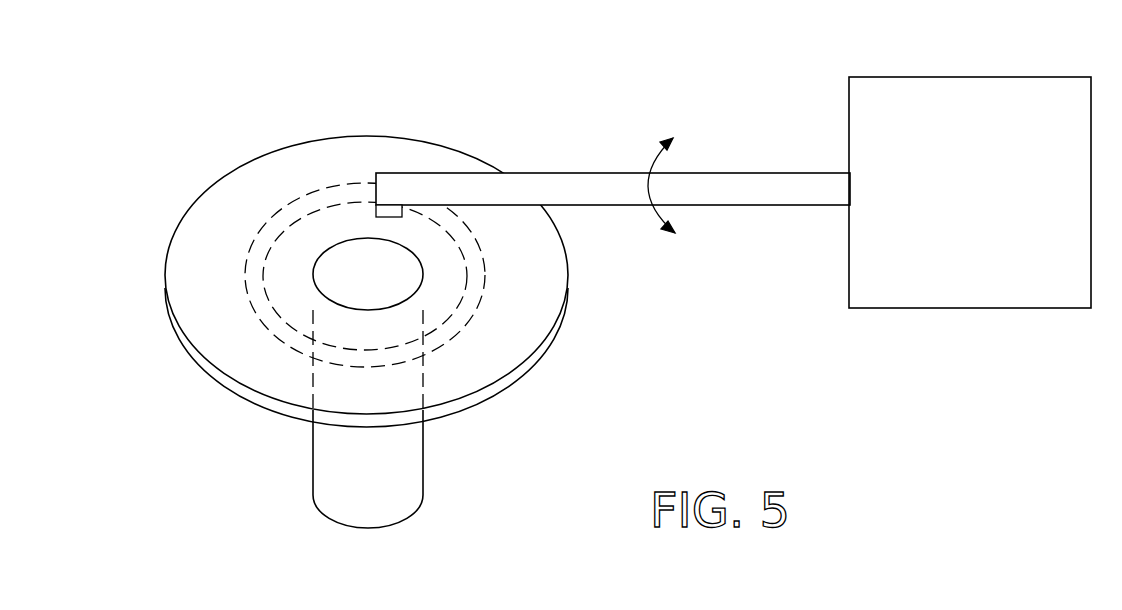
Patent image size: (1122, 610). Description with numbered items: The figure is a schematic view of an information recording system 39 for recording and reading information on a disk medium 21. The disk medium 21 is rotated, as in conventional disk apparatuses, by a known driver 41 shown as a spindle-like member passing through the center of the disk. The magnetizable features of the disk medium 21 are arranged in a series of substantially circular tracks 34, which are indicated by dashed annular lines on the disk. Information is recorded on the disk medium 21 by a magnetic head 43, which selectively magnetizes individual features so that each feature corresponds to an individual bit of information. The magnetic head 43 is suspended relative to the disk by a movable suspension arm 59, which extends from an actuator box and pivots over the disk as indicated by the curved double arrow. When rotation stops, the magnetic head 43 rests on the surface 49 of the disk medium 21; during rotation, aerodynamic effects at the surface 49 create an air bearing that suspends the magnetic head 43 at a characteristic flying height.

The disk medium 21 is at (240, 340).
The substantially circular tracks 34 is at (262, 256).
The information recording system 39 is at (453, 130).
The driver 41 is at (402, 487).
The magnetic head 43 is at (376, 213).
The surface of the disk medium 49 is at (200, 300).
The suspension arm 59 is at (762, 206).